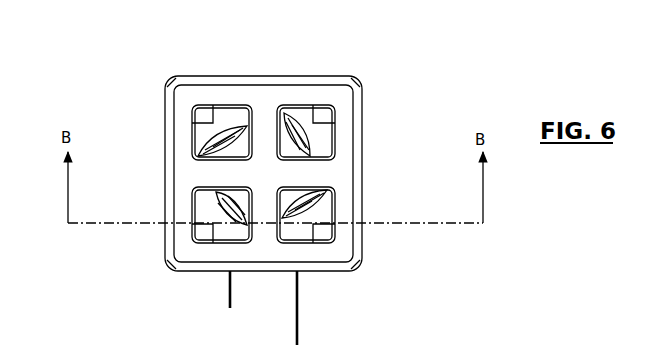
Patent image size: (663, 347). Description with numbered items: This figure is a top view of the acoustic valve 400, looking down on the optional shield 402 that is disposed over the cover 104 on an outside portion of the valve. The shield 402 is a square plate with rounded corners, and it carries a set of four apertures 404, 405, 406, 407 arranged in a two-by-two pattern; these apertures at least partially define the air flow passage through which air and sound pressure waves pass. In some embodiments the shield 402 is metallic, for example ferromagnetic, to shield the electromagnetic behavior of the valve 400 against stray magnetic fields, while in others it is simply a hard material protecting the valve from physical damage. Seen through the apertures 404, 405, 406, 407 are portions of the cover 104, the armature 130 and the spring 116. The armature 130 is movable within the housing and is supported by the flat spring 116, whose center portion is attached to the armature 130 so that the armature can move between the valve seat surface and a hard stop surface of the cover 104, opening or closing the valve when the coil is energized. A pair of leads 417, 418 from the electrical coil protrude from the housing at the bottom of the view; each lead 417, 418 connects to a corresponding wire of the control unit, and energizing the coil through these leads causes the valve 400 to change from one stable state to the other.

The acoustic valve 400 is at (52, 35).
The shield 402 is at (345, 170).
The aperture 404 is at (308, 108).
The aperture 405 is at (333, 213).
The aperture 406 is at (203, 208).
The aperture 407 is at (203, 140).
The armature 130 is at (230, 110).
The cover 104 is at (200, 107).
The spring 116 is at (293, 128).
The lead 417 is at (228, 297).
The lead 418 is at (300, 337).